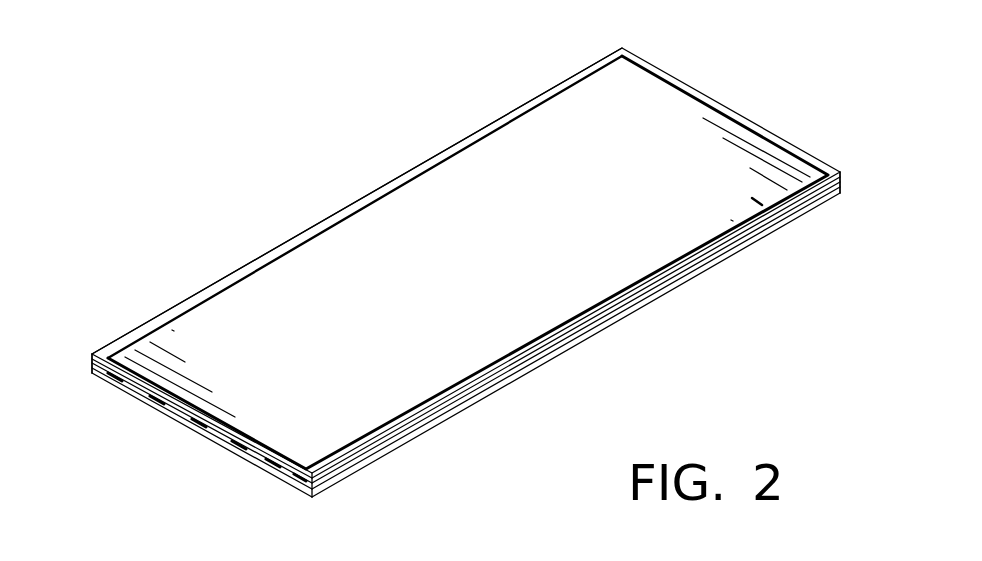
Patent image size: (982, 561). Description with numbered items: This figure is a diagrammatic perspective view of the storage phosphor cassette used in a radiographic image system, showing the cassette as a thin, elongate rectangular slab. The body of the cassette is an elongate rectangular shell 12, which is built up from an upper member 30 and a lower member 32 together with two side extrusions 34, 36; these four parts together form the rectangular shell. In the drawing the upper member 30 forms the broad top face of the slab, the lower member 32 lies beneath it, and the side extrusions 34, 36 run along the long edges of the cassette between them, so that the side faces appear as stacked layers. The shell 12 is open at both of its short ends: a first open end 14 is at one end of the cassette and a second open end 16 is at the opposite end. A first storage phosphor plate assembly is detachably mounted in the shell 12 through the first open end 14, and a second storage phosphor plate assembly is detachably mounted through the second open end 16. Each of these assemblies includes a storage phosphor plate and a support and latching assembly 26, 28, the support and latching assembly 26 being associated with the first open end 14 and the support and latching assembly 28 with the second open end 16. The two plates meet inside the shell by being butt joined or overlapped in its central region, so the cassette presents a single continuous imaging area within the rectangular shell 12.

The shell 12 is at (542, 108).
The first open end 14 is at (279, 452).
The second open end 16 is at (668, 88).
The support and latching assembly 26 is at (152, 453).
The support and latching assembly 28 is at (750, 86).
The upper member 30 is at (425, 184).
The lower member 32 is at (424, 437).
The side extrusion 34 is at (582, 340).
The side extrusion 36 is at (296, 236).